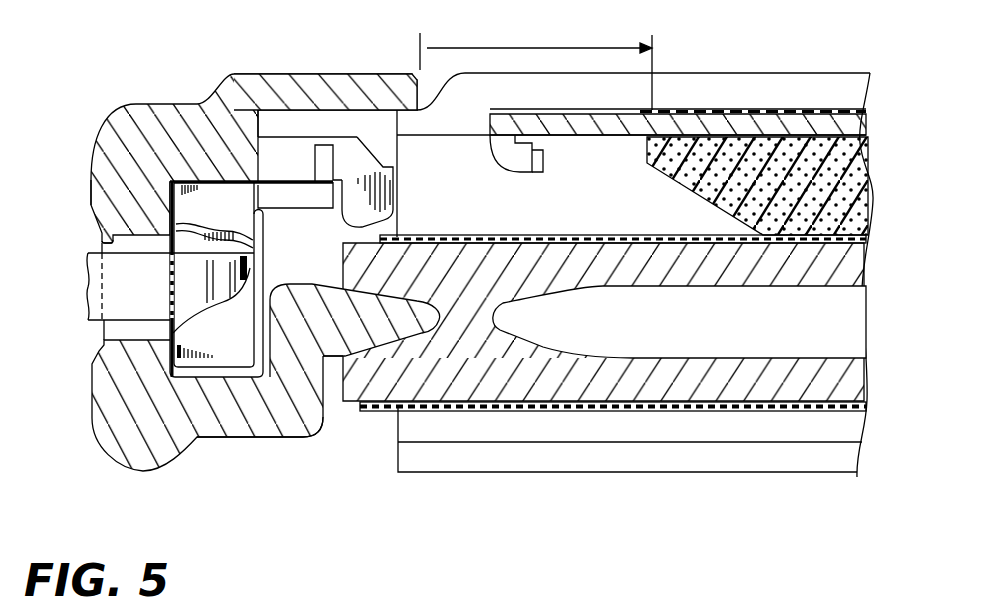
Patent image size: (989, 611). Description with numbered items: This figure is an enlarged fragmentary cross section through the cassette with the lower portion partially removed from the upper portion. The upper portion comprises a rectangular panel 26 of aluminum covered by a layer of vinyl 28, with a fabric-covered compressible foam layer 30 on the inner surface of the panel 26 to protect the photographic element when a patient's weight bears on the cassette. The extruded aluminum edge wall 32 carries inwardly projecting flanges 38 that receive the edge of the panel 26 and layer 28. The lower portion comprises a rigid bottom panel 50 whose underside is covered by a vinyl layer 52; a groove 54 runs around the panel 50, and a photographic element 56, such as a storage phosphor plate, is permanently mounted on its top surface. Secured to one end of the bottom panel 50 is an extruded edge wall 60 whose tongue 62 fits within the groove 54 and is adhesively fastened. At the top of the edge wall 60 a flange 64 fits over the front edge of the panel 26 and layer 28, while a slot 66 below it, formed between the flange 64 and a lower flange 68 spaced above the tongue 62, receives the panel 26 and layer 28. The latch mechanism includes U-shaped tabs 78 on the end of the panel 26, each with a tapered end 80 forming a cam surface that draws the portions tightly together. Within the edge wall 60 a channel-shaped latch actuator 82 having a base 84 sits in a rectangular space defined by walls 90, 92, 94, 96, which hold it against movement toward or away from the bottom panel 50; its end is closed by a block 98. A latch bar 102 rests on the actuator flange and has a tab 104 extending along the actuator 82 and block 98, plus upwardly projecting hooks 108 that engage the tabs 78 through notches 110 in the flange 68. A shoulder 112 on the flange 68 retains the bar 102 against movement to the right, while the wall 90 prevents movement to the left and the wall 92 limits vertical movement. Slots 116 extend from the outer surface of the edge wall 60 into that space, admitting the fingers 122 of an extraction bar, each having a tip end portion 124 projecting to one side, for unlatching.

The rectangular panel 26 is at (592, 114).
The layer of vinyl 28 is at (800, 109).
The foam layer 30 is at (720, 200).
The edge wall 32 is at (542, 467).
The flange 38 is at (723, 72).
The bottom panel 50 is at (787, 277).
The layer 52 is at (733, 413).
The groove 54 is at (435, 311).
The photographic element 56 is at (617, 237).
The edge wall 60 is at (242, 131).
The tongue 62 is at (385, 405).
The flange 64 is at (396, 70).
The slot 66 is at (322, 118).
The flange 68 is at (278, 133).
The tab 78 is at (507, 160).
The end 80 is at (546, 153).
The latch actuator 82 is at (270, 287).
The base 84 is at (243, 250).
The wall 90 is at (257, 380).
The wall 92 is at (185, 182).
The wall 94 is at (220, 380).
The wall 96 is at (279, 390).
The block 98 is at (240, 350).
The latch bar 102 is at (300, 198).
The tab 104 is at (180, 212).
The hook 108 is at (315, 160).
The notch 110 is at (382, 165).
The shoulder 112 is at (388, 217).
The slot 116 is at (104, 238).
The finger 122 is at (92, 283).
The tip end portion 124 is at (223, 284).